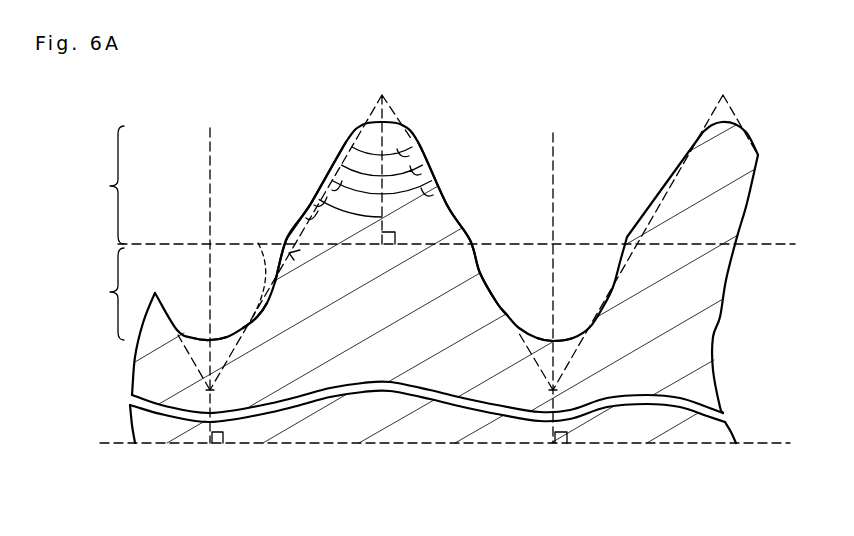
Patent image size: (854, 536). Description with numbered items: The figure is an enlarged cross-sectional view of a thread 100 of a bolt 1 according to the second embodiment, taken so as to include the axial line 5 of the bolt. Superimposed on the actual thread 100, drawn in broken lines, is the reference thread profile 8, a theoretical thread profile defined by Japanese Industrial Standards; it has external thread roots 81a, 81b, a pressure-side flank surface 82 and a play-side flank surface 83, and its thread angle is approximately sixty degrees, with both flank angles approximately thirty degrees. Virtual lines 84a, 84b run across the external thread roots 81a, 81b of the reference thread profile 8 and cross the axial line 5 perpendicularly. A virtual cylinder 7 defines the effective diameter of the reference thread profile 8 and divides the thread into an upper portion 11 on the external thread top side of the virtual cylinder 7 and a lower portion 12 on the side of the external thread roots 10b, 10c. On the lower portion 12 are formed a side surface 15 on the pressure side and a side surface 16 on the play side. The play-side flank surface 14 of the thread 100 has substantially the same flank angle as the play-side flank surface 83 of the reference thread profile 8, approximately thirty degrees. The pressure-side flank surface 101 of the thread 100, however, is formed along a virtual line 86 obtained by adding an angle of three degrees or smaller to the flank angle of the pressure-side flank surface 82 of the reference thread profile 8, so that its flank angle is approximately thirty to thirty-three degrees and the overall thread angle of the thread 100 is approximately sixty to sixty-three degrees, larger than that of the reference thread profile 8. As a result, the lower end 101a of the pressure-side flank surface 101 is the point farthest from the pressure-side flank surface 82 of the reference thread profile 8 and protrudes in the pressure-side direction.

The bolt 1 is at (713, 327).
The axial line 5 is at (757, 443).
The virtual cylinder 7 is at (161, 244).
The reference thread profile 8 is at (392, 112).
The upper portion 11 is at (104, 185).
The lower portion 12 is at (104, 294).
The play-side flank surface 14 is at (461, 228).
The side surface on pressure side 15 is at (250, 315).
The side surface on play side 16 is at (506, 302).
The external thread root 10b is at (202, 334).
The external thread root 10c is at (564, 337).
The external thread root 81a is at (210, 390).
The external thread root 81b is at (553, 390).
The pressure-side flank surface 82 is at (285, 253).
The play-side flank surface 83 is at (486, 257).
The virtual line 84a is at (208, 152).
The virtual line 84b is at (555, 148).
The virtual line 86 is at (262, 285).
The thread 100 is at (339, 66).
The pressure-side flank surface 101 is at (313, 190).
The lower end 101a is at (306, 232).